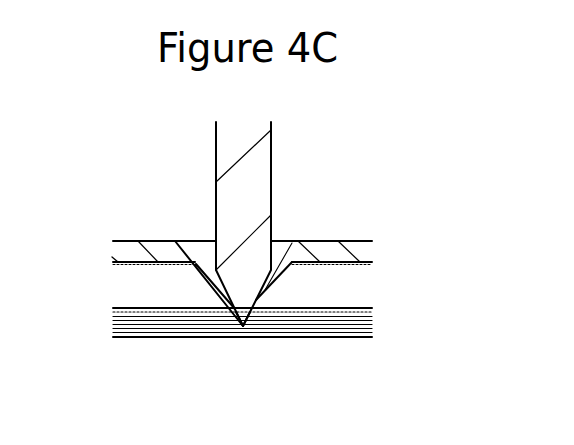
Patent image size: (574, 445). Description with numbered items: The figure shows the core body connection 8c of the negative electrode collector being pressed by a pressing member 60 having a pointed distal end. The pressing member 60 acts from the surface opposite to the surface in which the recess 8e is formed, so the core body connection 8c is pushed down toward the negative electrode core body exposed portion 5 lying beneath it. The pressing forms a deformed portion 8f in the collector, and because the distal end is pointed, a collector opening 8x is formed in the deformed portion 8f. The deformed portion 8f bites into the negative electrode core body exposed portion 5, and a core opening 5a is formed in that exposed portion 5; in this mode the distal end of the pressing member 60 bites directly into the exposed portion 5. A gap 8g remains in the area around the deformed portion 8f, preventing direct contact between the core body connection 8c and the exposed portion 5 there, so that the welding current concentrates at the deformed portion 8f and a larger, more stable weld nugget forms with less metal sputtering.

The pressing member 60 is at (223, 158).
The core body connection 8c is at (353, 241).
The recess 8e is at (152, 262).
The deformed portion 8f is at (274, 270).
The gap 8g is at (168, 285).
The collector opening 8x is at (254, 325).
The negative electrode core body exposed portion 5 is at (323, 320).
The core opening 5a is at (228, 328).